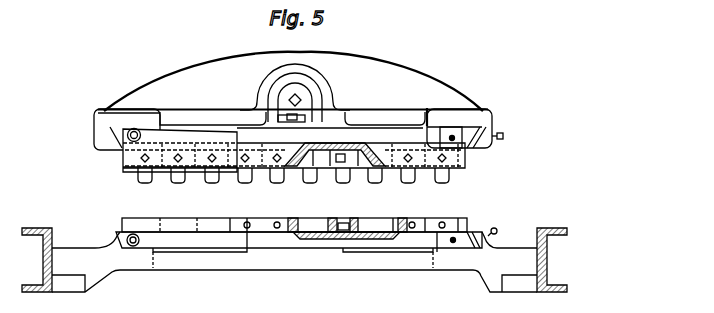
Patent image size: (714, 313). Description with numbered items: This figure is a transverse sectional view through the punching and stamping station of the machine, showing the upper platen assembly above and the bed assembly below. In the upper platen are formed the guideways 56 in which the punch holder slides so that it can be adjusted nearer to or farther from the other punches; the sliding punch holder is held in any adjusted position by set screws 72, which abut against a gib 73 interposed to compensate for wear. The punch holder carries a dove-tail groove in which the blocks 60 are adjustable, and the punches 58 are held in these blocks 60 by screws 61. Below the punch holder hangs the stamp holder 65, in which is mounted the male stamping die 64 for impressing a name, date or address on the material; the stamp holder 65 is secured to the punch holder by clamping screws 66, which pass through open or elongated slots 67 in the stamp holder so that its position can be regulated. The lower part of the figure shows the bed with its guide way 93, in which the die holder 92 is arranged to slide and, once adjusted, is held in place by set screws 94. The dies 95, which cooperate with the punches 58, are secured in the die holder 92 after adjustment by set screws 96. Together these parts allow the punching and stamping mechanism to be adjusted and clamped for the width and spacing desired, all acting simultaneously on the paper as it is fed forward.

The guideways 56 is at (117, 148).
The punches 58 is at (341, 184).
The blocks 60 is at (353, 172).
The screws 61 is at (340, 162).
The male stamping die 64 is at (165, 180).
The stamp holder 65 is at (131, 171).
The clamping screws 66 is at (142, 142).
The elongated slots 67 is at (137, 129).
The set screws 72 is at (504, 137).
The gib 73 is at (466, 146).
The die holder 92 is at (299, 235).
The guide way 93 is at (122, 233).
The set screws 94 is at (498, 229).
The dies 95 is at (357, 228).
The set screws 96 is at (277, 219).